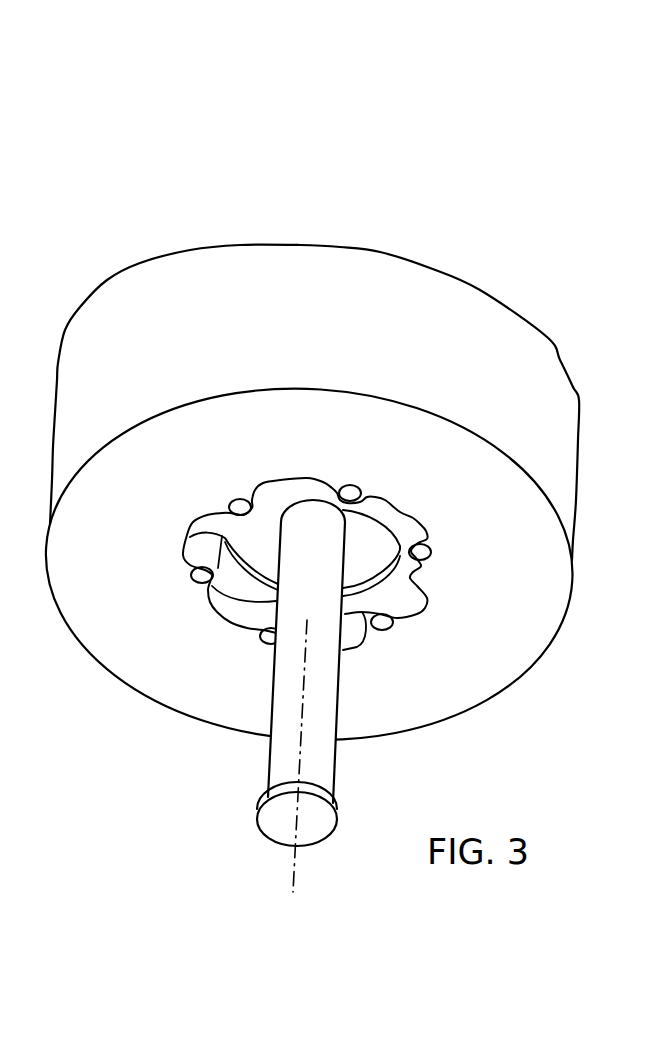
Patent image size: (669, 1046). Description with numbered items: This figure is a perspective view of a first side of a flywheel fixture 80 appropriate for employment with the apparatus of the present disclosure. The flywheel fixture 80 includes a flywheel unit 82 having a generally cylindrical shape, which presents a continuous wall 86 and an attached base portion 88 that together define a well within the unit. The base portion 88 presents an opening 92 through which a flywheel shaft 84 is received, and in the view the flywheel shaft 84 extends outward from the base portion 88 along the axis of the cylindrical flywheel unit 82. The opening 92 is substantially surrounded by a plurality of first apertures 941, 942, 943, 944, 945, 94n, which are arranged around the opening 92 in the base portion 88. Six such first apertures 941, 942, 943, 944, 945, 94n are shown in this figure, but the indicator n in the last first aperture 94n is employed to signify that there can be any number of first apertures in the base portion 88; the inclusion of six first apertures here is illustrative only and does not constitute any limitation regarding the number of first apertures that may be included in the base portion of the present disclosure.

The flywheel fixture 80 is at (344, 568).
The flywheel unit 82 is at (466, 282).
The flywheel shaft 84 is at (268, 768).
The continuous wall 86 is at (568, 390).
The base portion 88 is at (515, 628).
The opening 92 is at (370, 518).
The first aperture 941 is at (347, 484).
The first aperture 942 is at (431, 548).
The first aperture 943 is at (393, 623).
The first aperture 944 is at (262, 641).
The first aperture 945 is at (191, 575).
The first aperture 94n is at (229, 502).